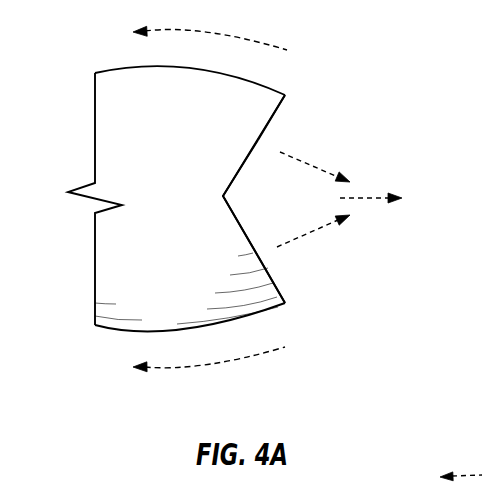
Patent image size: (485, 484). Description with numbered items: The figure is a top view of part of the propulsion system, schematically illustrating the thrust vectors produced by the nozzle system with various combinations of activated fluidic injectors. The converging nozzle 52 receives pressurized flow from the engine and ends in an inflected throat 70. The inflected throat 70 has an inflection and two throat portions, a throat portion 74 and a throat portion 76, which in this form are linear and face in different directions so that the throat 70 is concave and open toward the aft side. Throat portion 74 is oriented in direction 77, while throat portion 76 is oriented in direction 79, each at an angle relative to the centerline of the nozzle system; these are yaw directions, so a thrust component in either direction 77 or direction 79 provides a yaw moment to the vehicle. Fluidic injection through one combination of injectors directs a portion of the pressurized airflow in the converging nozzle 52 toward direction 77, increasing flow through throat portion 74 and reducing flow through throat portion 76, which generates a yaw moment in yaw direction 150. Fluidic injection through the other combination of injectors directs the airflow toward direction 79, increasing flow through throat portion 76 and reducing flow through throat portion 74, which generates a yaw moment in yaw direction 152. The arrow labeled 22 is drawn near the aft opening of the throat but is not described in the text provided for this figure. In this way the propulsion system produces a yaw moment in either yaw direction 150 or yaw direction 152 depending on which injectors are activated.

The converging nozzle 52 is at (188, 147).
The throat portion 76 is at (278, 122).
The inflected throat 70 is at (303, 142).
The direction 79 is at (333, 172).
The wall 22 is at (375, 199).
The direction 77 is at (323, 228).
The throat portion 74 is at (277, 278).
The yaw direction 152 is at (193, 32).
The yaw direction 150 is at (188, 368).